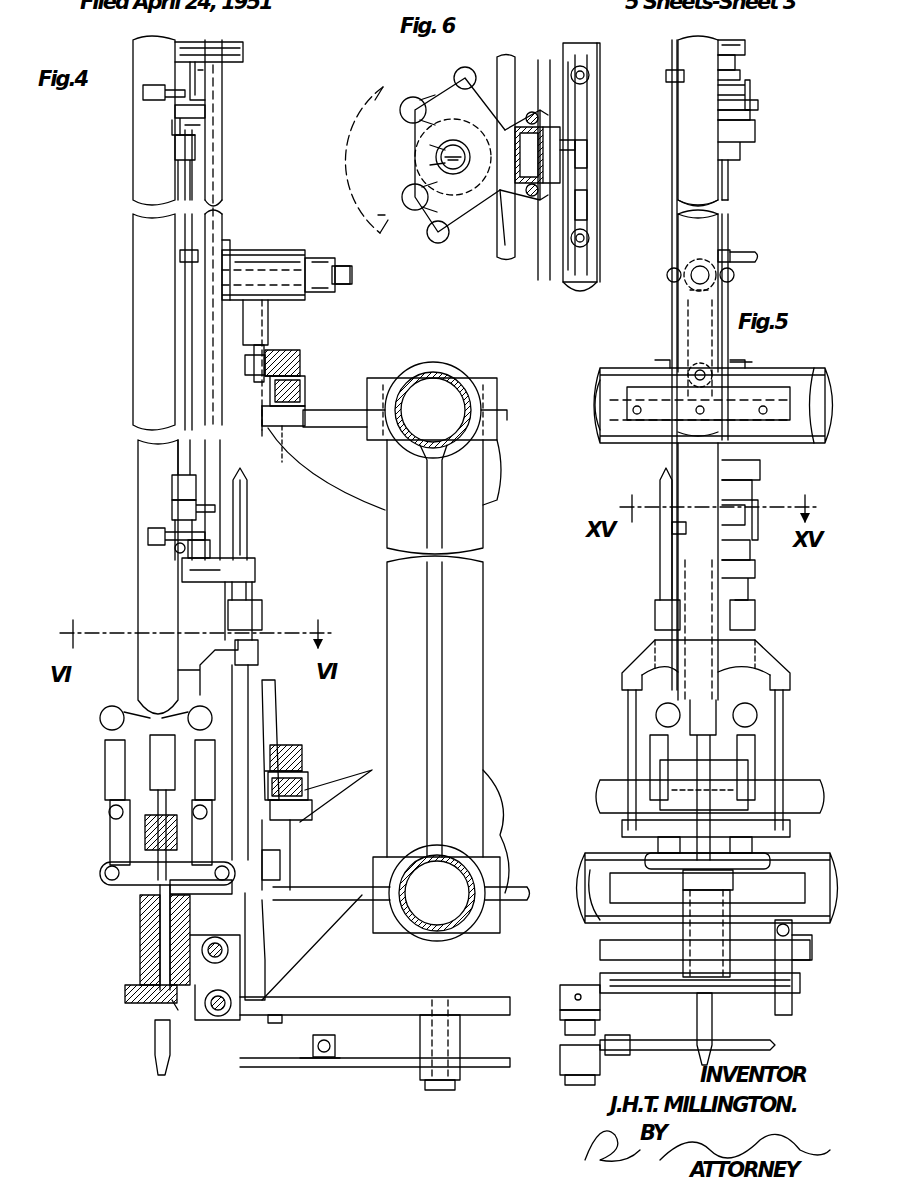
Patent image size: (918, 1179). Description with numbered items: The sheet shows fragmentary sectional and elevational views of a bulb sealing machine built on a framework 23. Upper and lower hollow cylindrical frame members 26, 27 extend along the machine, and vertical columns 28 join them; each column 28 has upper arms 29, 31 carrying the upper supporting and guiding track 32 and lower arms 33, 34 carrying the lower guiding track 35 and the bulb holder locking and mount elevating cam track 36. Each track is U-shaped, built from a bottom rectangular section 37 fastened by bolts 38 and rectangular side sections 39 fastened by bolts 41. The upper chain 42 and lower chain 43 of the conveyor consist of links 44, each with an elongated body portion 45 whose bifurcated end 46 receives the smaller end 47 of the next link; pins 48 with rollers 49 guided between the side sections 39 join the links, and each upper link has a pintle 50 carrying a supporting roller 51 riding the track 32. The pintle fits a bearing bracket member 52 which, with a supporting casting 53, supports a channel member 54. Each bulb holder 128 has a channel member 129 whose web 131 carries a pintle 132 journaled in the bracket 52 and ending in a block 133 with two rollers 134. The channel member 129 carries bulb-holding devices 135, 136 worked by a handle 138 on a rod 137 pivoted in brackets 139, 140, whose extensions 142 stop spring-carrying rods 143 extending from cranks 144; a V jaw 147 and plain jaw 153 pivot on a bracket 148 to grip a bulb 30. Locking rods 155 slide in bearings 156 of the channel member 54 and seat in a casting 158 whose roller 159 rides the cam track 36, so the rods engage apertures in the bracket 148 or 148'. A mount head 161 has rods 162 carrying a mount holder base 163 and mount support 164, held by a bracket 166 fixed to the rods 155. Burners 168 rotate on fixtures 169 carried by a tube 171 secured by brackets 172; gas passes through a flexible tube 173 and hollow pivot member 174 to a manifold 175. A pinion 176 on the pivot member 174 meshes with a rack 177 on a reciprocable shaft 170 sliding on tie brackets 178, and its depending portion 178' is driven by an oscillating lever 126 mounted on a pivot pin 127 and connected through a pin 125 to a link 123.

In FIG. 4, the framework 23 is at (487, 580).
In FIG. 4, the upper hollow cylindrical frame member 26 is at (455, 385).
In FIG. 5, the upper hollow cylindrical frame member 26 is at (630, 368).
In FIG. 4, the lower hollow cylindrical frame member 27 is at (465, 880).
In FIG. 5, the lower hollow cylindrical frame member 27 is at (590, 870).
In FIG. 4, the column 28 is at (476, 668).
In FIG. 4, the upper laterally extending arm 29 is at (356, 480).
In FIG. 4, the bulb 30 is at (140, 225).
In FIG. 6, the bulb 30 is at (405, 140).
In FIG. 5, the bulb 30 is at (695, 150).
In FIG. 4, the upper laterally extending arm 31 is at (495, 485).
In FIG. 4, the upper supporting and guiding track 32 is at (306, 388).
In FIG. 5, the upper supporting and guiding track 32 is at (770, 388).
In FIG. 4, the lower laterally extending arm 33 is at (372, 770).
In FIG. 4, the lower laterally extending arm 34 is at (502, 790).
In FIG. 4, the lower guiding track 35 is at (312, 782).
In FIG. 6, the lower guiding track 35 is at (600, 135).
In FIG. 5, the lower guiding track 35 is at (610, 776).
In FIG. 4, the bulb holder locking and mount elevating cam track 36 is at (290, 880).
In FIG. 6, the bulb holder locking and mount elevating cam track 36 is at (545, 55).
In FIG. 5, the bulb holder locking and mount elevating cam track 36 is at (580, 886).
In FIG. 4, the bottom rectangular section 37 is at (300, 430).
In FIG. 4, the bolt 38 is at (285, 462).
In FIG. 4, the rectangular side section 39 is at (262, 394).
In FIG. 6, the rectangular side section 39 is at (585, 283).
In FIG. 4, the bolt 41 is at (270, 426).
In FIG. 4, the upper chain 42 is at (302, 370).
In FIG. 5, the upper chain 42 is at (668, 360).
In FIG. 4, the lower chain 43 is at (295, 745).
In FIG. 6, the lower chain 43 is at (596, 160).
In FIG. 5, the lower chain 43 is at (770, 770).
In FIG. 4, the link 44 is at (286, 352).
In FIG. 6, the link 44 is at (590, 206).
In FIG. 5, the link 44 is at (748, 365).
In FIG. 6, the elongated body portion 45 is at (594, 102).
In FIG. 6, the bifurcated end 46 is at (547, 282).
In FIG. 6, the smaller end 47 is at (590, 78).
In FIG. 6, the pin 48 is at (598, 55).
In FIG. 4, the roller 49 is at (306, 398).
In FIG. 6, the roller 49 is at (580, 45).
In FIG. 4, the pintle 50 is at (300, 360).
In FIG. 4, the supporting roller 51 is at (264, 348).
In FIG. 6, the supporting roller 51 is at (590, 130).
In FIG. 5, the supporting roller 51 is at (704, 355).
In FIG. 4, the bearing bracket member 52 is at (268, 262).
In FIG. 4, the supporting casting 53 is at (270, 692).
In FIG. 6, the supporting casting 53 is at (540, 200).
In FIG. 4, the channel member 54 is at (250, 520).
In FIG. 6, the channel member 54 is at (505, 245).
In FIG. 4, the link 123 is at (325, 1058).
In FIG. 5, the link 123 is at (770, 1045).
In FIG. 4, the pin 125 is at (330, 1040).
In FIG. 4, the oscillating lever 126 is at (270, 1068).
In FIG. 5, the oscillating lever 126 is at (562, 1065).
In FIG. 4, the pivot pin 127 is at (436, 1090).
In FIG. 5, the pivot pin 127 is at (570, 1080).
In FIG. 4, the bulb holder 128 is at (224, 165).
In FIG. 5, the bulb holder 128 is at (735, 192).
In FIG. 4, the channel member 129 is at (222, 212).
In FIG. 5, the channel member 129 is at (672, 228).
In FIG. 4, the web 131 is at (226, 252).
In FIG. 4, the pintle 132 is at (292, 250).
In FIG. 5, the pintle 132 is at (690, 320).
In FIG. 4, the block 133 is at (312, 262).
In FIG. 6, the block 133 is at (380, 215).
In FIG. 5, the block 133 is at (745, 272).
In FIG. 4, the roller 134 is at (350, 282).
In FIG. 6, the roller 134 is at (350, 282).
In FIG. 5, the roller 134 is at (680, 276).
In FIG. 4, the bulb-holding device 135 is at (226, 90).
In FIG. 5, the bulb-holding device 135 is at (752, 45).
In FIG. 4, the bulb-holding device 136 is at (140, 536).
In FIG. 4, the rod 137 is at (185, 290).
In FIG. 5, the rod 137 is at (740, 172).
In FIG. 4, the handle 138 is at (180, 256).
In FIG. 5, the handle 138 is at (755, 250).
In FIG. 4, the bulb holder bracket 139 is at (172, 128).
In FIG. 5, the bulb holder bracket 139 is at (758, 108).
In FIG. 4, the bulb holder bracket 140 is at (175, 495).
In FIG. 5, the bulb holder bracket 140 is at (660, 480).
In FIG. 5, the extension 142 is at (760, 122).
In FIG. 4, the spring-carrying rod 143 is at (175, 118).
In FIG. 5, the spring-carrying rod 143 is at (765, 88).
In FIG. 4, the crank 144 is at (196, 142).
In FIG. 5, the crank 144 is at (762, 138).
In FIG. 5, the bulb holding V jaw 147 is at (672, 55).
In FIG. 4, the bracket 148 is at (246, 565).
In FIG. 5, the bracket 148 is at (767, 580).
In FIG. 4, the bracket 148' is at (238, 47).
In FIG. 5, the bracket 148' is at (744, 34).
In FIG. 4, the plain jaw 153 is at (143, 92).
In FIG. 5, the plain jaw 153 is at (745, 72).
In FIG. 4, the locking rod 155 is at (250, 592).
In FIG. 5, the locking rod 155 is at (690, 580).
In FIG. 4, the bearing 156 is at (263, 615).
In FIG. 5, the bearing 156 is at (658, 612).
In FIG. 4, the casting 158 is at (205, 885).
In FIG. 5, the casting 158 is at (655, 845).
In FIG. 4, the roller 159 is at (300, 862).
In FIG. 5, the roller 159 is at (745, 880).
In FIG. 4, the mount head 161 is at (215, 650).
In FIG. 5, the mount head 161 is at (762, 660).
In FIG. 4, the rod 162 is at (160, 770).
In FIG. 6, the rod 162 is at (462, 80).
In FIG. 5, the rod 162 is at (630, 700).
In FIG. 4, the mount holder base 163 is at (130, 820).
In FIG. 5, the mount holder base 163 is at (790, 830).
In FIG. 4, the mount support 164 is at (150, 742).
In FIG. 6, the mount support 164 is at (430, 152).
In FIG. 5, the mount support 164 is at (722, 745).
In FIG. 4, the bracket 166 is at (258, 650).
In FIG. 6, the bracket 166 is at (505, 260).
In FIG. 5, the bracket 166 is at (650, 656).
In FIG. 4, the burner 168 is at (150, 710).
In FIG. 6, the burner 168 is at (470, 78).
In FIG. 5, the burner 168 is at (655, 712).
In FIG. 4, the fixture 169 is at (140, 945).
In FIG. 5, the fixture 169 is at (730, 920).
In FIG. 4, the reciprocable shaft 170 is at (285, 962).
In FIG. 5, the reciprocable shaft 170 is at (555, 1000).
In FIG. 4, the hollow shaft or tube 171 is at (250, 945).
In FIG. 6, the hollow shaft or tube 171 is at (507, 60).
In FIG. 5, the hollow shaft or tube 171 is at (610, 945).
In FIG. 4, the bracket 172 is at (248, 920).
In FIG. 4, the flexible tube 173 is at (155, 1058).
In FIG. 5, the flexible tube 173 is at (712, 1055).
In FIG. 4, the hollow pivot member 174 is at (155, 922).
In FIG. 4, the manifold 175 is at (110, 876).
In FIG. 6, the manifold 175 is at (410, 82).
In FIG. 5, the manifold 175 is at (668, 878).
In FIG. 4, the pinion 176 is at (145, 1005).
In FIG. 5, the pinion 176 is at (685, 920).
In FIG. 4, the rack 177 is at (178, 1010).
In FIG. 5, the rack 177 is at (680, 1000).
In FIG. 5, the tie bracket 178 is at (772, 967).
In FIG. 4, the depending portion 178' is at (273, 1032).
In FIG. 5, the depending portion 178' is at (551, 1018).